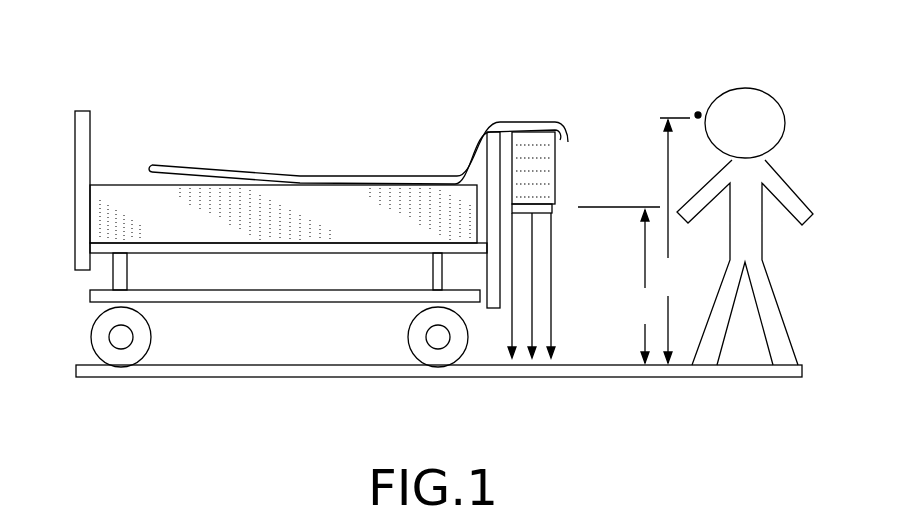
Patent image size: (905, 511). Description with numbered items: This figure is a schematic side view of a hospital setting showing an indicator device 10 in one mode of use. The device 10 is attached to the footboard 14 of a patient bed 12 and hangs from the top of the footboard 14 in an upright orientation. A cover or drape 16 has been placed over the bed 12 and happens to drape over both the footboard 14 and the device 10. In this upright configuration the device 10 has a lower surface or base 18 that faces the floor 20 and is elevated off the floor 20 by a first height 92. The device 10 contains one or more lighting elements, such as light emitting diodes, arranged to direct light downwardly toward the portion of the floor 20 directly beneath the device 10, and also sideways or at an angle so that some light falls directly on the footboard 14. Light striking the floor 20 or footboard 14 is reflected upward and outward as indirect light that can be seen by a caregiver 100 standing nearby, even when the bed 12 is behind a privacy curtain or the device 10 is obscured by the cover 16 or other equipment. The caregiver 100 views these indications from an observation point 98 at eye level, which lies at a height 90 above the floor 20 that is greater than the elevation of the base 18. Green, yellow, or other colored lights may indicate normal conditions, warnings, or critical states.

The device 10 is at (572, 158).
The patient bed 12 is at (112, 198).
The footboard 14 is at (503, 172).
The cover or drape 16 is at (462, 162).
The lower surface or base 18 is at (553, 213).
The floor 20 is at (318, 364).
The height 90 is at (675, 240).
The first height 92 is at (619, 285).
The observation point 98 is at (690, 106).
The caregiver 100 is at (745, 226).